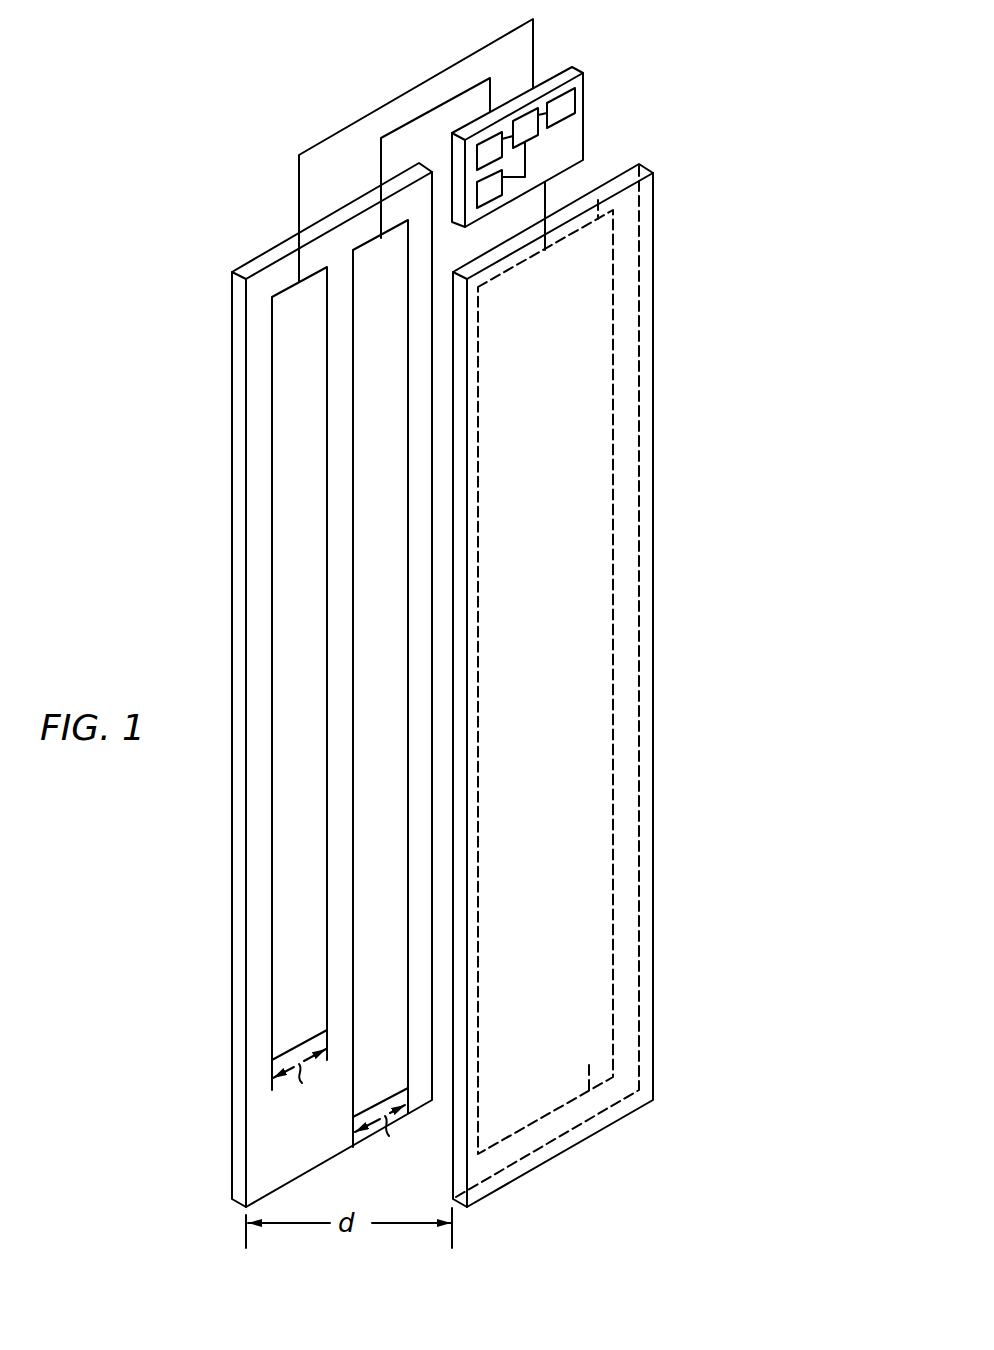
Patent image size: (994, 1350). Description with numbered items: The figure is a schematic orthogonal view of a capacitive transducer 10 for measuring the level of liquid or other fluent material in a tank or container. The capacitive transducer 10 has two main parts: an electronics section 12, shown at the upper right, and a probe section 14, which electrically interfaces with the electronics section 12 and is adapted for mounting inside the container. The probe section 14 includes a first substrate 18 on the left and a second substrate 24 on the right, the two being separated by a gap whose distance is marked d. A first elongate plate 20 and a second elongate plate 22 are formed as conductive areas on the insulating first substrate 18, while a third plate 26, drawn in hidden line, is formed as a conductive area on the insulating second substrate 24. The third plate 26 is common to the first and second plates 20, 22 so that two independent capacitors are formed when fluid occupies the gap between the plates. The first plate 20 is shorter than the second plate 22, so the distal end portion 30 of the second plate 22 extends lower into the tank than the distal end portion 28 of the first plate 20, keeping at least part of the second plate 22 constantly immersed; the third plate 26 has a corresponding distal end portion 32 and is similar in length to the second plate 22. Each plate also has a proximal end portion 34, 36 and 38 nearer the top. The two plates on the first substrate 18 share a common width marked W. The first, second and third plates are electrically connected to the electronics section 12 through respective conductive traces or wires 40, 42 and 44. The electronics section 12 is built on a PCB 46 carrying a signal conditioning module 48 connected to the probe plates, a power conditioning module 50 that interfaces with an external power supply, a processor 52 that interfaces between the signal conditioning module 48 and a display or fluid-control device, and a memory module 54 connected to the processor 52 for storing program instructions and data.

The capacitive transducer 10 is at (253, 191).
The electronics section 12 is at (587, 127).
The probe section 14 is at (672, 459).
The first substrate 18 is at (238, 347).
The first elongate plate 20 is at (287, 505).
The second elongate plate 22 is at (367, 360).
The second substrate 24 is at (647, 280).
The third plate 26 is at (614, 530).
The distal end portion 28 is at (299, 1043).
The distal end portion 30 is at (370, 1115).
The distal end portion 32 is at (589, 1066).
The proximal end portion 34 is at (283, 290).
The proximal end portion 36 is at (368, 241).
The proximal end portion 38 is at (598, 200).
The conductive trace or wire 40 is at (453, 66).
The conductive trace or wire 42 is at (401, 127).
The conductive trace or wire 44 is at (550, 200).
The PCB 46 is at (553, 77).
The signal conditioning module 48 is at (487, 152).
The power conditioning module 50 is at (490, 190).
The processor 52 is at (525, 122).
The memory module 54 is at (570, 98).